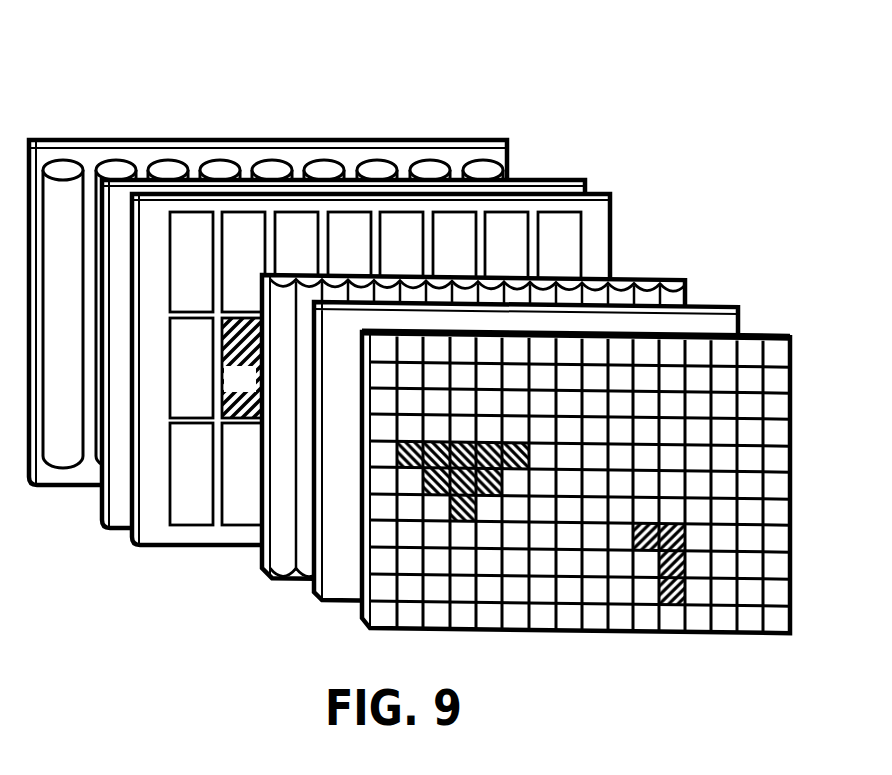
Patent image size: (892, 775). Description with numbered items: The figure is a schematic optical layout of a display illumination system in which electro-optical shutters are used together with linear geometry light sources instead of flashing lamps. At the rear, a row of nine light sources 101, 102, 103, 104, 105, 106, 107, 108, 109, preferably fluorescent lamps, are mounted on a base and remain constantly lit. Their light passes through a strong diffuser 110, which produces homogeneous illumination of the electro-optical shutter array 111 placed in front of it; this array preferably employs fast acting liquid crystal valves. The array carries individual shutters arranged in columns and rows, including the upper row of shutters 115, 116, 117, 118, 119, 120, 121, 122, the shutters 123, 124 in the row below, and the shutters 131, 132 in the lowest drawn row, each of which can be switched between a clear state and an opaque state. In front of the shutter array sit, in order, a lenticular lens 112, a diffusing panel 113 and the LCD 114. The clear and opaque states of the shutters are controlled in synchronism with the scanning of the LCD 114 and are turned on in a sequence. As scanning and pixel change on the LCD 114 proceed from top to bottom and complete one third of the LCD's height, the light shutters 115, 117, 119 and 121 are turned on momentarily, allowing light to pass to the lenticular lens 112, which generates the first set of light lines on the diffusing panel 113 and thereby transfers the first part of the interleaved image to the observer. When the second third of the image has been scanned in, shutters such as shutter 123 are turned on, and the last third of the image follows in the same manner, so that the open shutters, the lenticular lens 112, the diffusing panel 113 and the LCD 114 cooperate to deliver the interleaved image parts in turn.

The light source 101 is at (62, 165).
The light source 102 is at (116, 165).
The light source 103 is at (166, 166).
The light source 104 is at (219, 166).
The light source 105 is at (271, 167).
The light source 106 is at (324, 167).
The light source 107 is at (377, 168).
The light source 108 is at (429, 168).
The light source 109 is at (483, 168).
The strong diffuser 110 is at (585, 189).
The electro-optical shutter array 111 is at (397, 369).
The lenticular lens 112 is at (686, 280).
The diffusing panel 113 is at (740, 309).
The LCD 114 is at (792, 340).
The light shutter 115 is at (206, 250).
The light shutter 116 is at (258, 250).
The light shutter 117 is at (311, 250).
The light shutter 118 is at (364, 250).
The light shutter 119 is at (416, 250).
The light shutter 120 is at (469, 250).
The light shutter 121 is at (521, 250).
The light shutter 122 is at (574, 250).
The light shutter 123 is at (206, 390).
The light shutter 124 is at (258, 390).
The light shutter 131 is at (206, 469).
The light shutter 132 is at (258, 469).